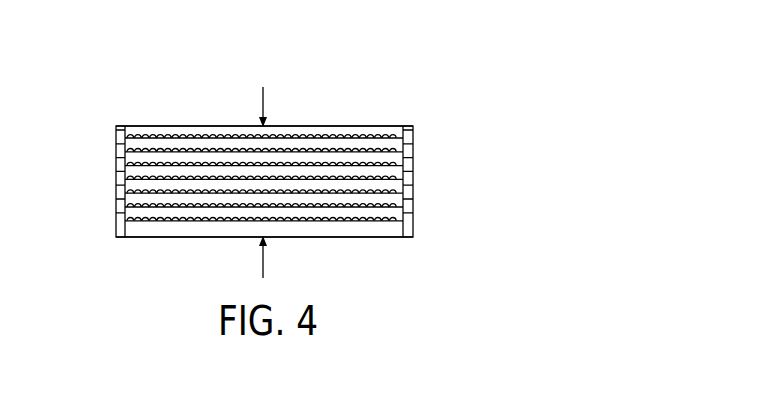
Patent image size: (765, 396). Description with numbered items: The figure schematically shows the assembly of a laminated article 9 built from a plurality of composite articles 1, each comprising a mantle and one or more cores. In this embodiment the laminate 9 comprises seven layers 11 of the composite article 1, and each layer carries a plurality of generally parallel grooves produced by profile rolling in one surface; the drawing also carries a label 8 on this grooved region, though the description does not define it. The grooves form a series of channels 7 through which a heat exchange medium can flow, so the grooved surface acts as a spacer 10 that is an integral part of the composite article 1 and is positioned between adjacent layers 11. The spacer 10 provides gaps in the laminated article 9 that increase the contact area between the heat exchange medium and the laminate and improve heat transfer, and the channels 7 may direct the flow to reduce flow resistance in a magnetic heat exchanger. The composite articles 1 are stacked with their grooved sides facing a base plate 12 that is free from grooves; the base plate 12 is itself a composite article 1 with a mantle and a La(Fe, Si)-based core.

The composite article 1 is at (126, 150).
The channels 7 is at (326, 137).
The embossment 8 is at (345, 137).
The laminated article 9 is at (426, 72).
The spacer 10 is at (150, 124).
The layers 11 is at (412, 148).
The base plate 12 is at (152, 230).